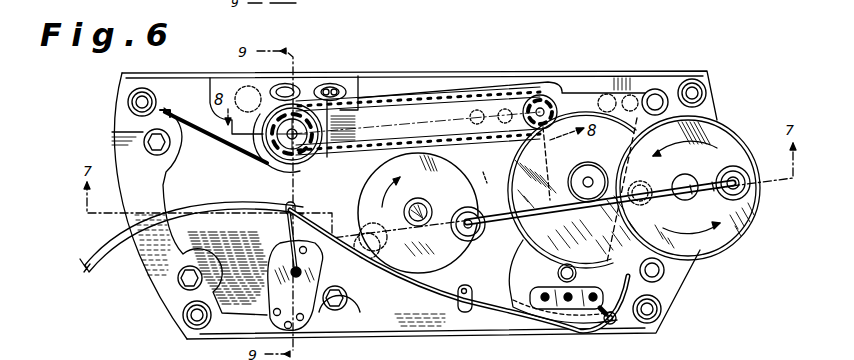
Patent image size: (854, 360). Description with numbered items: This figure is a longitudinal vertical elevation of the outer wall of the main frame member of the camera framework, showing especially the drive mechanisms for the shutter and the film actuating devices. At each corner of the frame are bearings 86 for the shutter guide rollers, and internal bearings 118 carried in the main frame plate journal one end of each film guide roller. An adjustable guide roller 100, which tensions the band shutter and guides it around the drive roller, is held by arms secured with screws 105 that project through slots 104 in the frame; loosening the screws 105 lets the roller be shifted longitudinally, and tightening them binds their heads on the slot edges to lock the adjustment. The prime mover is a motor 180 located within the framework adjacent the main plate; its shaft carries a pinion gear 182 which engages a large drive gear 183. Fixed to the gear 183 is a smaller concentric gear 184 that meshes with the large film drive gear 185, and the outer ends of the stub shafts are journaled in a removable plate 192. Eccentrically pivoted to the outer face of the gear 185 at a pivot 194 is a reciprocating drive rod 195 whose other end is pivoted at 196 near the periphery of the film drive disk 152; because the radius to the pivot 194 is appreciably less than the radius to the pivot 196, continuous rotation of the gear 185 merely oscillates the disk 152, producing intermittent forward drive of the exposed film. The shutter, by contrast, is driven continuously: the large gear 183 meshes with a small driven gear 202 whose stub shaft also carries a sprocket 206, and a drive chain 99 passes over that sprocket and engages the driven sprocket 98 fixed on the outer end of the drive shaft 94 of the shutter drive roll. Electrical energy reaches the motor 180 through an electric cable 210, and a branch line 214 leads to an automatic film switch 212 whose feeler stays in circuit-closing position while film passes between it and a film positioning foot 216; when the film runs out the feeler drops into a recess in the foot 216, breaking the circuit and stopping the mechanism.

The bearings 86 is at (128, 101).
The internal bearings 118 is at (144, 141).
The adjustable guide roller 100 is at (234, 80).
The slots 104 is at (290, 88).
The screws 105 is at (333, 87).
The drive chain 99 is at (395, 98).
The drive shaft 94 is at (282, 165).
The driven sprocket 98 is at (262, 163).
The sprocket 206 is at (538, 93).
The removable plate 192 is at (594, 62).
The film drive disk 152 is at (376, 180).
The film drive gear 185 is at (751, 185).
The pivot 196 is at (469, 242).
The small driven gear 202 is at (543, 132).
The smaller concentric gear 184 is at (569, 180).
The pinion gear 182 is at (570, 265).
The reciprocating drive rod 195 is at (575, 218).
The large drive gear 183 is at (484, 167).
The pivot 194 is at (758, 213).
The electric cable 210 is at (230, 203).
The branch line 214 is at (263, 228).
The automatic film switch 212 is at (300, 333).
The motor 180 is at (530, 278).
The film positioning foot 216 is at (282, 13).